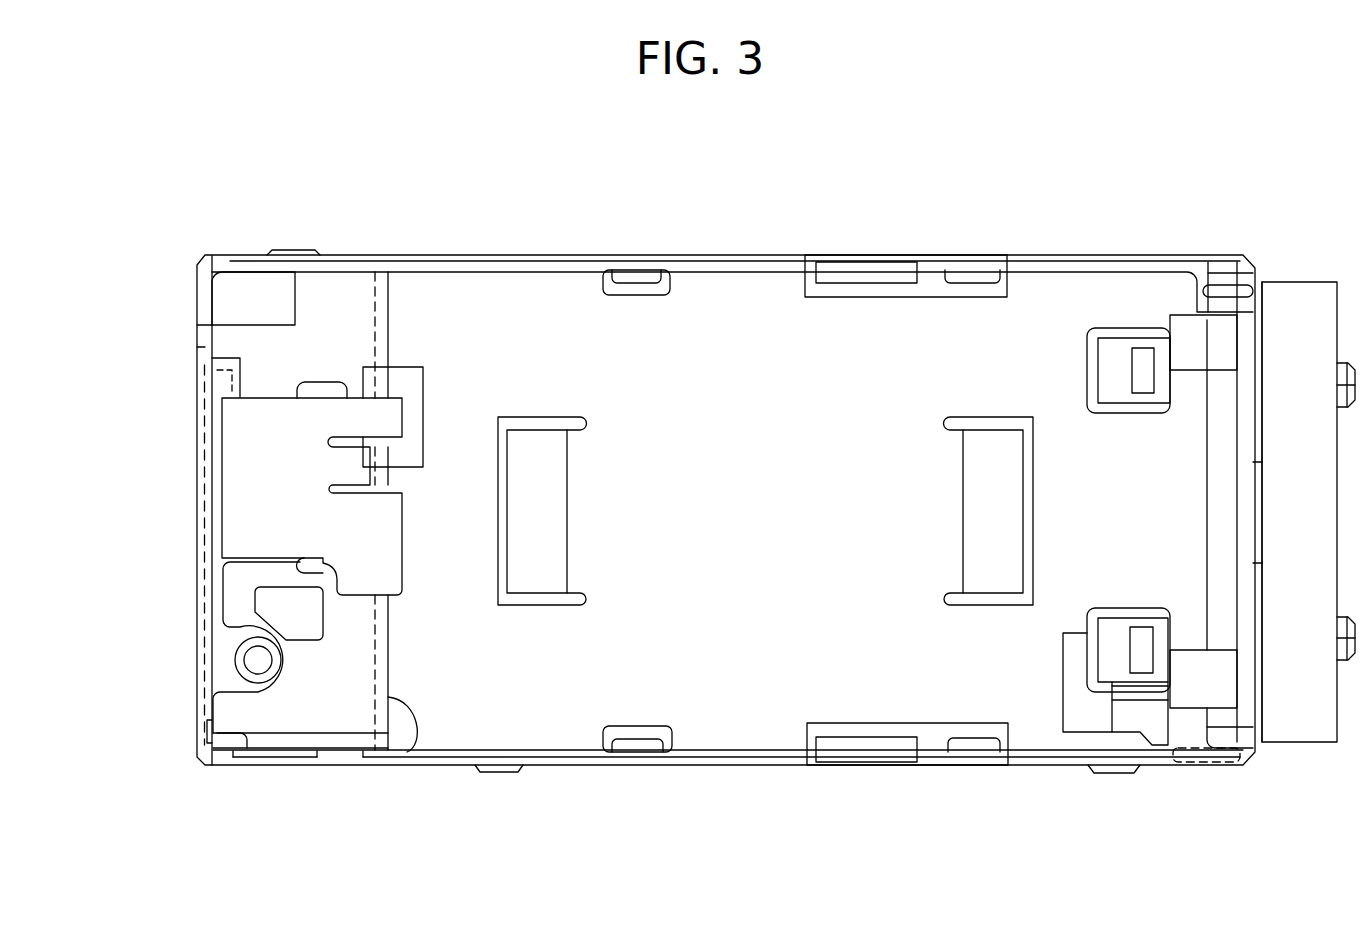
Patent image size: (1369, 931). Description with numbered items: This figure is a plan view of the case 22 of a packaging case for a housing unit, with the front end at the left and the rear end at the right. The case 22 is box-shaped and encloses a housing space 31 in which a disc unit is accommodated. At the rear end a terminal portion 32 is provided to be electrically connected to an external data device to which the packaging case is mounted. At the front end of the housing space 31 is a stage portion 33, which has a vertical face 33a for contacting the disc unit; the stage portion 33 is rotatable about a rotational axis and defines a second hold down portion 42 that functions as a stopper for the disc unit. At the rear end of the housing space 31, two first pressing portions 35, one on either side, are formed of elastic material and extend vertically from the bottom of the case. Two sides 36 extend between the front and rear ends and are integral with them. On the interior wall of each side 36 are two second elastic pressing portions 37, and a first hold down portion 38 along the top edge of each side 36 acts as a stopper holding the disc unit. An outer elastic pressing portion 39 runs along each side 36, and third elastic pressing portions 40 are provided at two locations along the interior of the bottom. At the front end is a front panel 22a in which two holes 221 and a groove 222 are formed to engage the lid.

The case 22 is at (797, 150).
The holes 221 is at (204, 347).
The groove 222 is at (207, 729).
The front panel 22a is at (195, 466).
The housing space 31 is at (527, 315).
The terminal portion 32 is at (1318, 735).
The stage portion 33 is at (358, 643).
The vertical face 33a is at (407, 752).
The first pressing portions 35 is at (1105, 356).
The sides 36 is at (741, 254).
The second elastic pressing portions 37 is at (637, 276).
The first hold down portion 38 is at (861, 276).
The outer elastic pressing portion 39 is at (288, 248).
The third elastic pressing portions 40 is at (565, 525).
The second hold down portion 42 is at (240, 517).